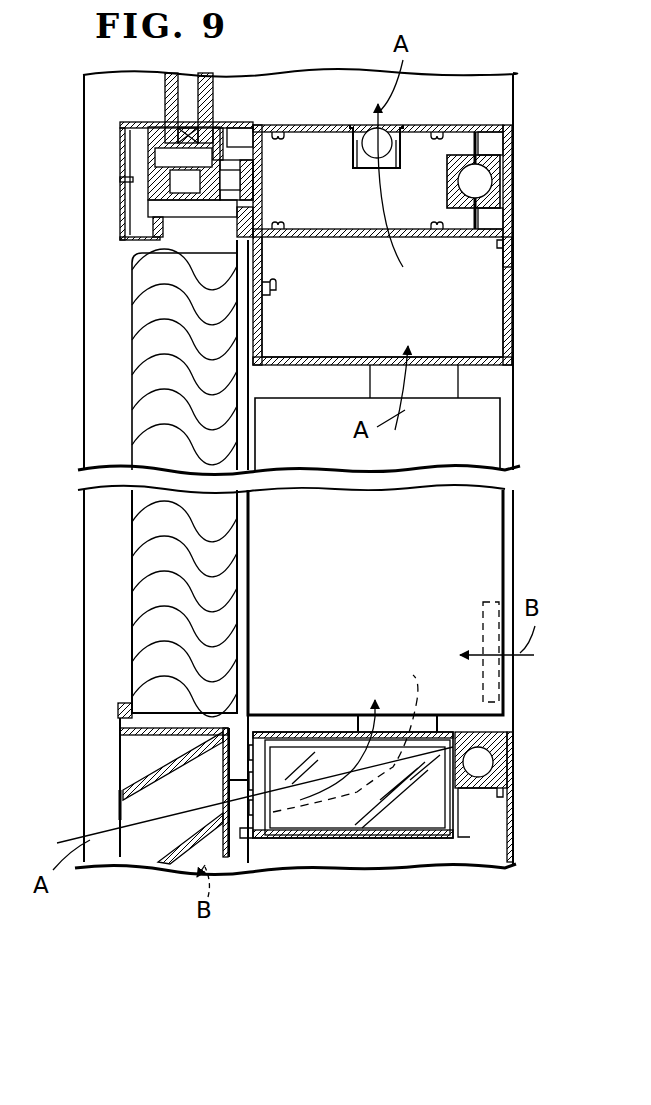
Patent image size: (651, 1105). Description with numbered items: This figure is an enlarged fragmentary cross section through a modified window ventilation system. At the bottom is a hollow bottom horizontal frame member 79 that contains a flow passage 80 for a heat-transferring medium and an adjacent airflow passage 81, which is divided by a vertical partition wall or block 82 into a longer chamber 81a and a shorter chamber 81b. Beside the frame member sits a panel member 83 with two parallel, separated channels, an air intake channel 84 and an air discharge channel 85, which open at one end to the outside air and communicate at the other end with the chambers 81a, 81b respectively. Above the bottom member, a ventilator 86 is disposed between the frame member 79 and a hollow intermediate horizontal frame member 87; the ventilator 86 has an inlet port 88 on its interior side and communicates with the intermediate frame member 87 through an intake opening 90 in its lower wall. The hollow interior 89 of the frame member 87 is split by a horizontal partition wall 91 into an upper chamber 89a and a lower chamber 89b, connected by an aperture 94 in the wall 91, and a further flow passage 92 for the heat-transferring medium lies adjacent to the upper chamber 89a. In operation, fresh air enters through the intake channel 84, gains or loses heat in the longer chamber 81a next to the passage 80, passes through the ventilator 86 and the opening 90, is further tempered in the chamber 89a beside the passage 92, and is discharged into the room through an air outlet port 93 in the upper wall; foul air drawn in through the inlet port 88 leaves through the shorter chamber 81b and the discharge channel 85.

The bottom horizontal frame member 79 is at (305, 840).
The flow passage 80 is at (480, 762).
The airflow passage 81 is at (470, 918).
The longer chamber 81a is at (372, 820).
The shorter chamber 81b is at (415, 813).
The vertical partition wall 82 is at (293, 760).
The panel member 83 is at (148, 577).
The air intake channel 84 is at (130, 820).
The air discharge channel 85 is at (190, 856).
The ventilator 86 is at (478, 554).
The intermediate horizontal frame member 87 is at (518, 270).
The inlet port 88 is at (500, 680).
The hollow interior 89 is at (478, 313).
The upper chamber 89a is at (307, 152).
The lower chamber 89b is at (315, 340).
The intake opening 90 is at (437, 366).
The horizontal partition wall 91 is at (315, 238).
The flow passage 92 is at (478, 181).
The air outlet port 93 is at (367, 130).
The aperture 94 is at (383, 232).